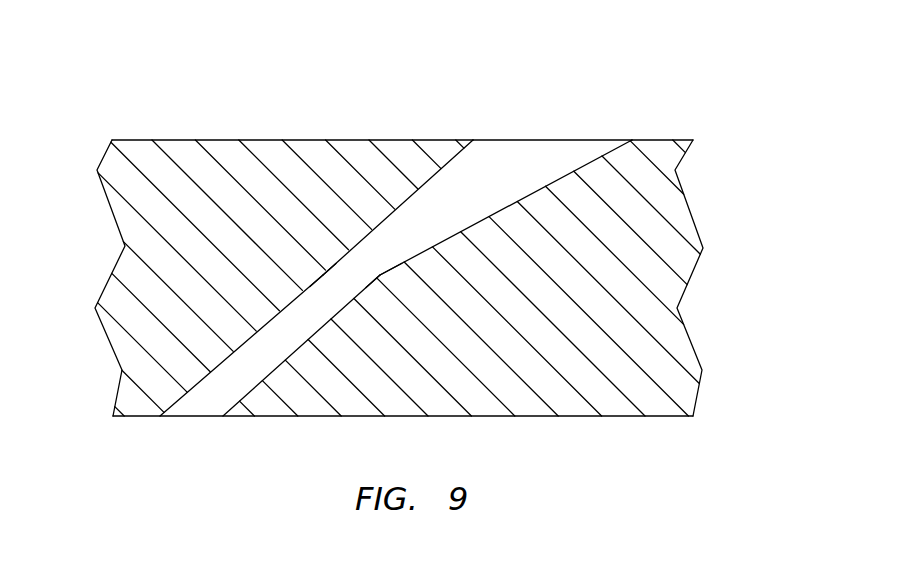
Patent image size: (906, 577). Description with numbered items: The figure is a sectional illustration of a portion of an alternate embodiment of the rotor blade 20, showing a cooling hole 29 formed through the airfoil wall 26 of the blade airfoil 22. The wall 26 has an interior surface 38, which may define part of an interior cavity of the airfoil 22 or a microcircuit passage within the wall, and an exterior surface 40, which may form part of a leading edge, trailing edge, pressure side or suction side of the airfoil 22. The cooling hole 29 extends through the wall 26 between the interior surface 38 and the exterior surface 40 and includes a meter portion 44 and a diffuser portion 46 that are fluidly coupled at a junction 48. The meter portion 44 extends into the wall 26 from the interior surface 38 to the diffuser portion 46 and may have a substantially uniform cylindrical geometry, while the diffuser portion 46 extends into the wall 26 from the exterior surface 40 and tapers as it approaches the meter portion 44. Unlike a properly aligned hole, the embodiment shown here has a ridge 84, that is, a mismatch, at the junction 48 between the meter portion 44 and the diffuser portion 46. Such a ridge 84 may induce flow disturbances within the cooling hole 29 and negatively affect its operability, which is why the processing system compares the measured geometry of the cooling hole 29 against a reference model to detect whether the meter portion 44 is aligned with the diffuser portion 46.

The rotor blade 20 is at (122, 89).
The blade airfoil 22 is at (704, 217).
The airfoil wall 26 is at (697, 265).
The cooling hole 29 is at (557, 142).
The interior surface 38 is at (140, 418).
The exterior surface 40 is at (158, 140).
The meter portion 44 is at (289, 352).
The diffuser portion 46 is at (494, 200).
The junction 48 is at (323, 275).
The ridge 84 is at (380, 275).